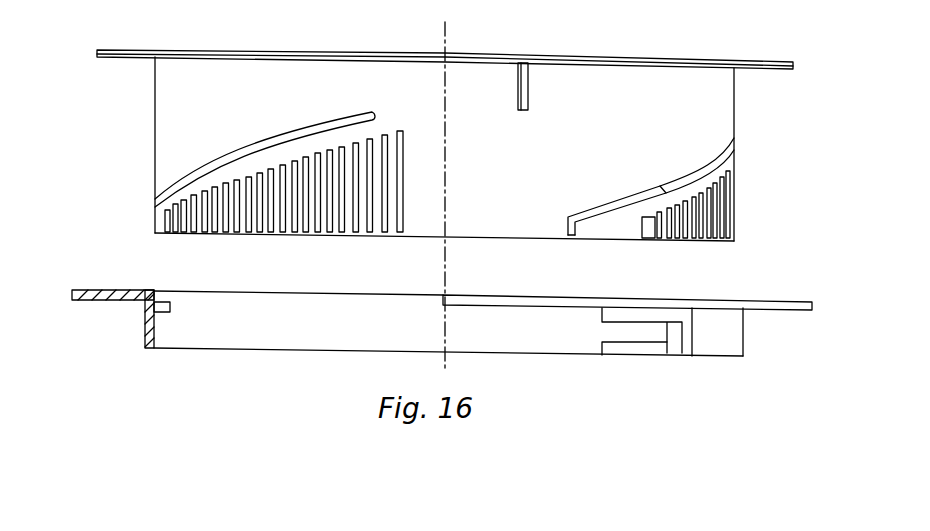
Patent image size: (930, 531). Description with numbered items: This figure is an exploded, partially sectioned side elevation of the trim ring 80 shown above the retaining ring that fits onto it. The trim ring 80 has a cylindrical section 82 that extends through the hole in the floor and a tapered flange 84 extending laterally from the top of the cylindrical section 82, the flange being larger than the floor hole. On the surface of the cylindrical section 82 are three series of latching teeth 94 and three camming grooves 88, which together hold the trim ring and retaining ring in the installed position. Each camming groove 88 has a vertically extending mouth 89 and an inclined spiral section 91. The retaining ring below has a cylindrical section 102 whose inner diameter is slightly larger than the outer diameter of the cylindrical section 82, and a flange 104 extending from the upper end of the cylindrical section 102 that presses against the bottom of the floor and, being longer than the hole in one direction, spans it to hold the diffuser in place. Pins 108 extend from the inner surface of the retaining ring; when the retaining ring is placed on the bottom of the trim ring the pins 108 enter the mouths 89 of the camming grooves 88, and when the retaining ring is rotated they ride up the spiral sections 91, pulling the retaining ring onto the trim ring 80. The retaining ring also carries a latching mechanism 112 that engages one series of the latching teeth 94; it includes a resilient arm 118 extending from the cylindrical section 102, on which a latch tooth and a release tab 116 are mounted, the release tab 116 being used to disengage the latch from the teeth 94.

The trim ring 80 is at (347, 47).
The cylindrical section 82 is at (178, 104).
The tapered flange 84 is at (724, 62).
The camming grooves 88 is at (197, 172).
The vertically extending mouths 89 is at (575, 242).
The inclined spiral sections 91 is at (322, 126).
The latching teeth 94 is at (262, 236).
The cylindrical section 102 is at (143, 336).
The flange 104 is at (110, 302).
The pins 108 is at (163, 312).
The latching mechanism 112 is at (648, 340).
The release tab 116 is at (680, 350).
The resilient arm 118 is at (621, 344).